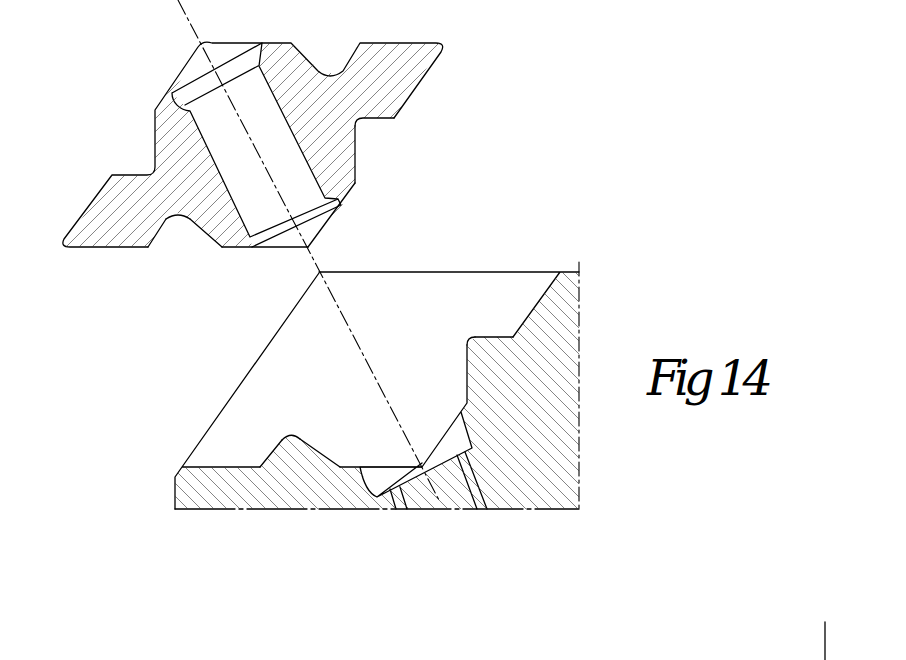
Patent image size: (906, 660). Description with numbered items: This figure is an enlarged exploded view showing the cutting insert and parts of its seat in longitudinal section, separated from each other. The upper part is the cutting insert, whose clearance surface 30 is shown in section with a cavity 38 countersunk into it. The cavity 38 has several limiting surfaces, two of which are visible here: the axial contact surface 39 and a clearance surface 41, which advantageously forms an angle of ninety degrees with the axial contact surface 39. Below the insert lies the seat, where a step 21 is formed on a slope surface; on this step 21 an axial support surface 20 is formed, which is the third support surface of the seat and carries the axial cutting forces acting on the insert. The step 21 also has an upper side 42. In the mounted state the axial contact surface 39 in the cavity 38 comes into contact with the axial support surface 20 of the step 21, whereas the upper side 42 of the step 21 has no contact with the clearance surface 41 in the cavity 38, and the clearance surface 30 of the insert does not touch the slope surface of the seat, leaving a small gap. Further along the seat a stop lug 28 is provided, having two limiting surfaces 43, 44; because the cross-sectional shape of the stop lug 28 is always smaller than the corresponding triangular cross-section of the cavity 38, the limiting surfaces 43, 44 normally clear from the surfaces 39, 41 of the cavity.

The clearance surface 30 is at (427, 88).
The clearance surface 41 is at (383, 118).
The cavity 38 is at (370, 142).
The axial contact surface 39 is at (357, 157).
The axial support surface 20 is at (467, 368).
The step 21 is at (462, 330).
The upper side 42 is at (490, 335).
The stop lug 28 is at (292, 424).
The limiting surface 44 is at (271, 450).
The limiting surface 43 is at (318, 450).